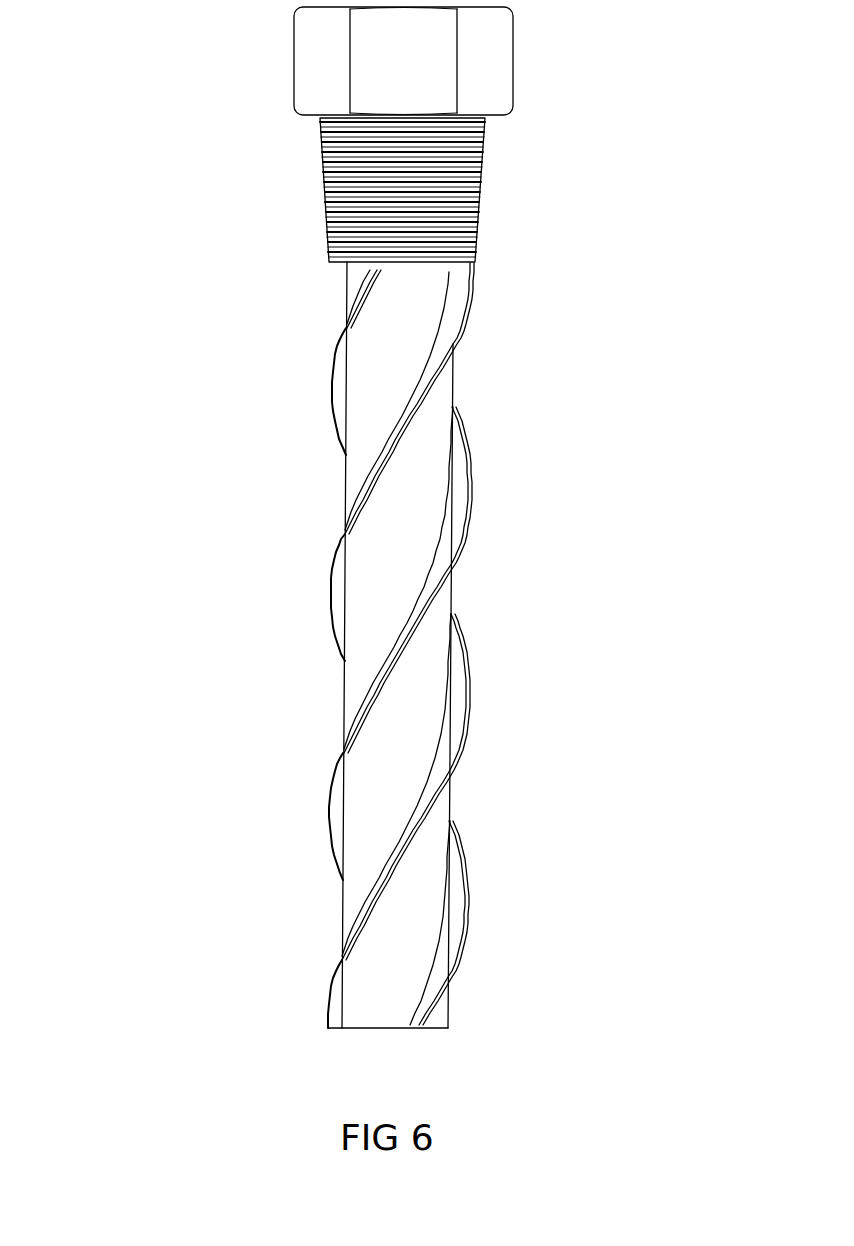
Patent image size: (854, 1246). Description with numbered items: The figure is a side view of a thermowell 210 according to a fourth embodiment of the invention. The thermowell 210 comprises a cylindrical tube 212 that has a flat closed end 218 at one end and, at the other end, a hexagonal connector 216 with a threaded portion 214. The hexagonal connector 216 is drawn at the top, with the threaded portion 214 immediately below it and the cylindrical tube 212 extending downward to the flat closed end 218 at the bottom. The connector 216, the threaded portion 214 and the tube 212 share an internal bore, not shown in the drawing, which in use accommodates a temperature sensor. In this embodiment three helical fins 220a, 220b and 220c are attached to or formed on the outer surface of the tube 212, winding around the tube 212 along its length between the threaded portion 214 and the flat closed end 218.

The thermowell 210 is at (232, 609).
The cylindrical tube 212 is at (360, 457).
The threaded portion 214 is at (480, 195).
The hexagonal connector 216 is at (323, 61).
The flat closed end 218 is at (380, 1060).
The helical fin 220a is at (466, 900).
The helical fin 220b is at (467, 690).
The helical fin 220c is at (470, 488).